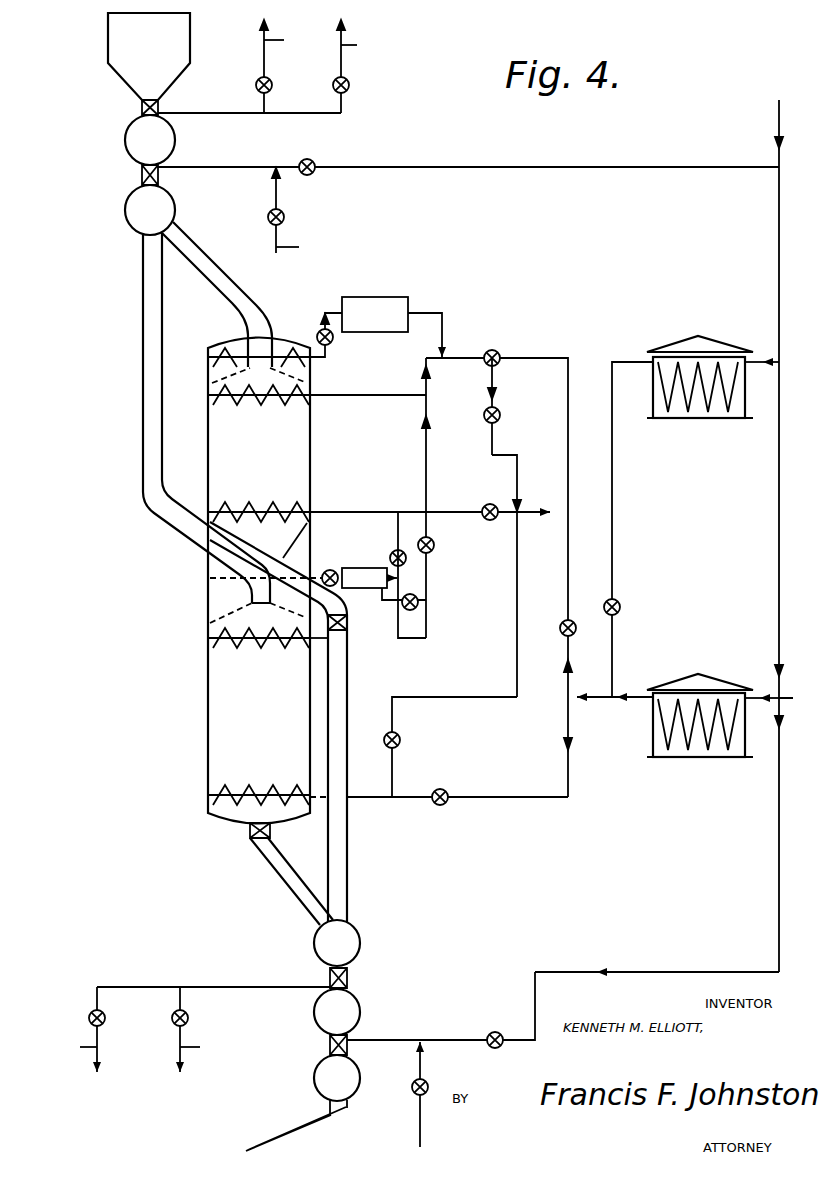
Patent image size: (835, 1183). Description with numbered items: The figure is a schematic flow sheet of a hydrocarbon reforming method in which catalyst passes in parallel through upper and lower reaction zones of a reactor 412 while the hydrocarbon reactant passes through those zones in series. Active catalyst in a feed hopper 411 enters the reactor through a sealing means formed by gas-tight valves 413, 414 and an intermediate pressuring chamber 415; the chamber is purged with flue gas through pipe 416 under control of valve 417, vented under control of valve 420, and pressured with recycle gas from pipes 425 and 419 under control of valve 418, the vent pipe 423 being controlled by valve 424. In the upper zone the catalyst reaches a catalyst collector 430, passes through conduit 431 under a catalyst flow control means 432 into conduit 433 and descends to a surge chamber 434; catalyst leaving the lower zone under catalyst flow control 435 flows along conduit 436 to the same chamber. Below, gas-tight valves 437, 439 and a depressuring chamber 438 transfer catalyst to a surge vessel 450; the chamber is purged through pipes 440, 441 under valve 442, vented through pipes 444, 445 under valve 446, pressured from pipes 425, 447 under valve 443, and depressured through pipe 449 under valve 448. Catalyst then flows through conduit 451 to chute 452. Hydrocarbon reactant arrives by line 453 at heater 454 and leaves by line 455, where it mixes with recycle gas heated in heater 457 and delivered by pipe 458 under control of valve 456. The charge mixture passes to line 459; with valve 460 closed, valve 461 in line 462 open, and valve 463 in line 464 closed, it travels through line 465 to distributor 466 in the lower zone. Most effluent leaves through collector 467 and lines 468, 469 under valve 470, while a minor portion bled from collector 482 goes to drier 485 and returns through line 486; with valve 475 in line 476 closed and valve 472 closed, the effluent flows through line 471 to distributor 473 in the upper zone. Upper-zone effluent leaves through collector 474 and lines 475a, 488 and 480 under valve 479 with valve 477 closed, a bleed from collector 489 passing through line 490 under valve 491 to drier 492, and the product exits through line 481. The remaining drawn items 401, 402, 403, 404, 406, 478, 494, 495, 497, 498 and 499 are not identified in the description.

The vent line 401 is at (292, 41).
The gas outlet line 402 is at (238, 114).
The level control connection 403 is at (315, 567).
The control valve 404 is at (334, 571).
The gas line 406 is at (231, 168).
The feed hopper 411 is at (149, 56).
The reactor 412 is at (210, 383).
The gas-tight valve 413 is at (160, 108).
The gas-tight valve 414 is at (142, 176).
The pressuring chamber 415 is at (125, 140).
The pipe 416 is at (309, 247).
The valve 417 is at (285, 217).
The valve 418 is at (315, 161).
The pipe 419 is at (612, 166).
The valve 420 is at (273, 86).
The pipe 423 is at (367, 46).
The valve 424 is at (350, 85).
The pipe 425 is at (779, 128).
The catalyst collector 430 is at (278, 576).
The conduit 431 is at (310, 547).
The catalyst flow control means 432 is at (347, 641).
The conduit 433 is at (348, 679).
The surge chamber 434 is at (360, 943).
The catalyst flow control 435 is at (250, 832).
The conduit 436 is at (300, 895).
The gas-tight valve 437 is at (350, 975).
The depressuring chamber 438 is at (360, 1010).
The gas-tight valve 439 is at (330, 1043).
The pipe 440 is at (420, 1138).
The pipe 441 is at (425, 1029).
The valve 442 is at (430, 1085).
The valve 443 is at (503, 1015).
The pipe 444 is at (245, 973).
The pipe 445 is at (67, 1047).
The valve 446 is at (90, 1014).
The pipe 447 is at (692, 971).
The valve 448 is at (189, 1018).
The pipe 449 is at (209, 1047).
The surge vessel 450 is at (314, 1083).
The conduit 451 is at (330, 1108).
The chute 452 is at (250, 1148).
The line 453 is at (768, 692).
The heater 454 is at (708, 752).
The line 455 is at (635, 694).
The pipe and valve 456 is at (762, 360).
The heater 457 is at (706, 412).
The pipe 458 is at (613, 479).
The line 459 is at (612, 528).
The valve 460 is at (560, 633).
The valve 461 is at (455, 781).
The line 462 is at (522, 791).
The valve 463 is at (401, 740).
The line 464 is at (480, 692).
The line 465 is at (439, 811).
The distributor 466 is at (262, 777).
The collector 467 is at (212, 644).
The line 468 is at (415, 639).
The line 469 is at (220, 347).
The valve 470 is at (407, 558).
The line 471 is at (368, 503).
The valve 472 is at (491, 504).
The distributor 473 is at (262, 491).
The collector 474 is at (270, 406).
The valve 475 is at (435, 545).
The line 475a is at (368, 407).
The line 476 is at (426, 462).
The valve 477 is at (494, 350).
The gas line 478 is at (568, 358).
The valve 479 is at (507, 410).
The line 480 is at (492, 432).
The line 481 is at (540, 499).
The collector 482 is at (215, 582).
The drier 485 is at (364, 578).
The line 486 is at (400, 579).
The line 488 is at (402, 395).
The collector 489 is at (356, 618).
The line 490 is at (327, 316).
The valve 491 is at (318, 334).
The drier 492 is at (393, 287).
The valve 494 is at (419, 600).
The gas line 495 is at (444, 312).
The lock hopper 497 is at (125, 211).
The feed pipe 498 is at (207, 268).
The feed pipe 499 is at (142, 343).